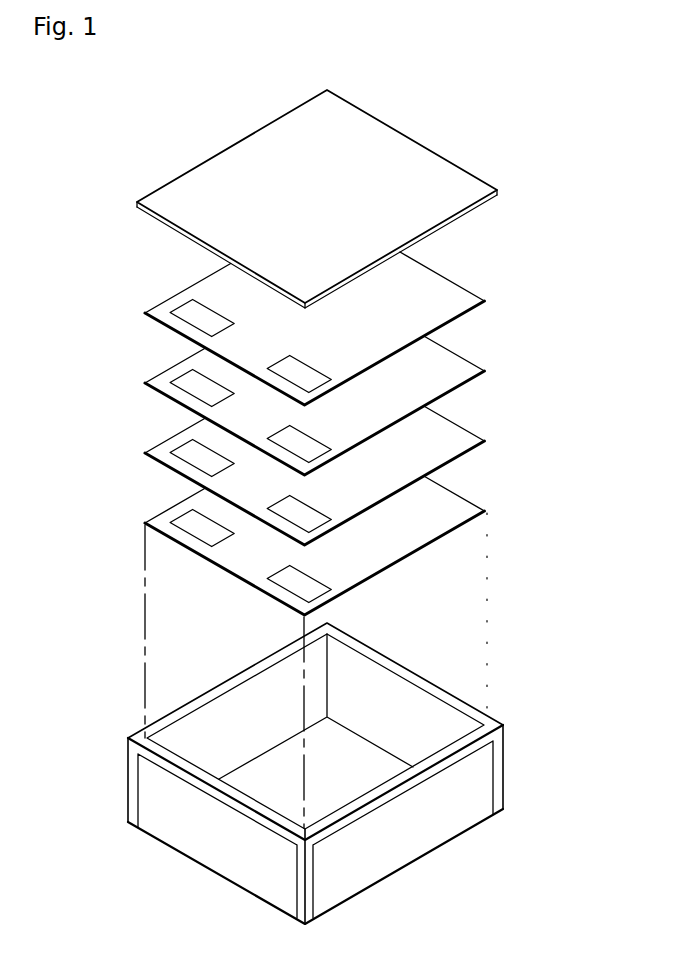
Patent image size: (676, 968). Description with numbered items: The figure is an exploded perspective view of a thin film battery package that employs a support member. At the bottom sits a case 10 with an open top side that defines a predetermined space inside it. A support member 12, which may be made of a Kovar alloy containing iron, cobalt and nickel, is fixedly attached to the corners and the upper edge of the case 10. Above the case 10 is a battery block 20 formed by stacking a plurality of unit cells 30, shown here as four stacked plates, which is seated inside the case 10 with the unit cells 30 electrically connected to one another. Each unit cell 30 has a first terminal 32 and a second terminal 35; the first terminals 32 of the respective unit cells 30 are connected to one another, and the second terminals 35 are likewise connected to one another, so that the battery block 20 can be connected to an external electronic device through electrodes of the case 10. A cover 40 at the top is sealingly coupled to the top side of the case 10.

The case 10 is at (275, 783).
The support member 12 is at (138, 776).
The battery block 20 is at (314, 420).
The unit cell 30 is at (437, 290).
The first terminal 32 is at (190, 312).
The second terminal 35 is at (308, 377).
The cover 40 is at (392, 142).